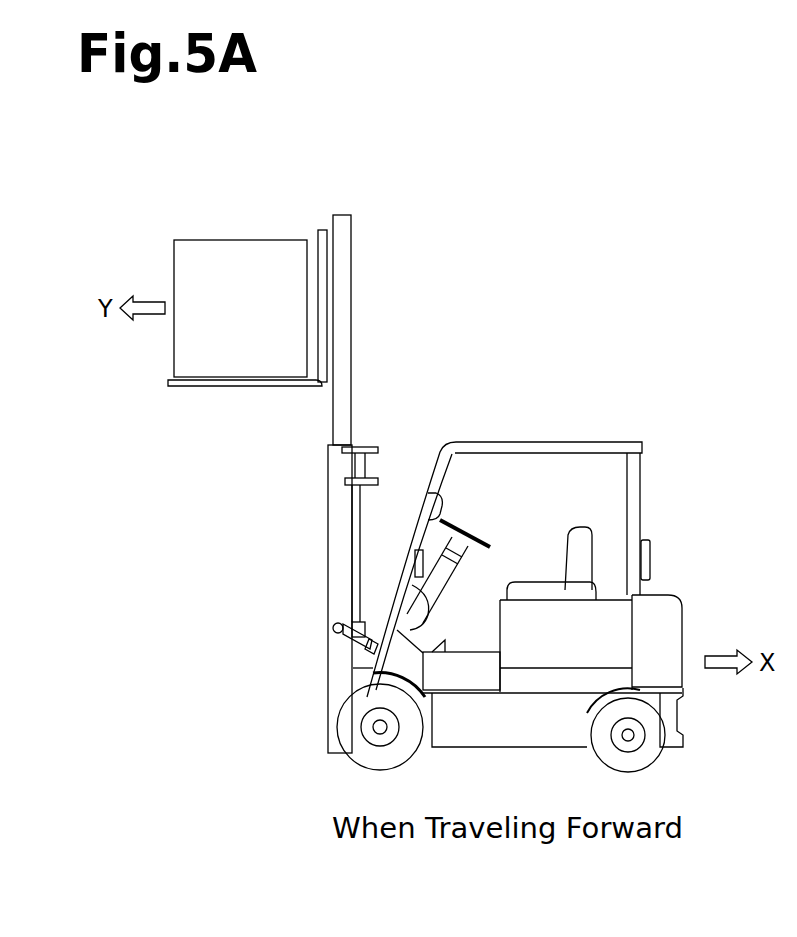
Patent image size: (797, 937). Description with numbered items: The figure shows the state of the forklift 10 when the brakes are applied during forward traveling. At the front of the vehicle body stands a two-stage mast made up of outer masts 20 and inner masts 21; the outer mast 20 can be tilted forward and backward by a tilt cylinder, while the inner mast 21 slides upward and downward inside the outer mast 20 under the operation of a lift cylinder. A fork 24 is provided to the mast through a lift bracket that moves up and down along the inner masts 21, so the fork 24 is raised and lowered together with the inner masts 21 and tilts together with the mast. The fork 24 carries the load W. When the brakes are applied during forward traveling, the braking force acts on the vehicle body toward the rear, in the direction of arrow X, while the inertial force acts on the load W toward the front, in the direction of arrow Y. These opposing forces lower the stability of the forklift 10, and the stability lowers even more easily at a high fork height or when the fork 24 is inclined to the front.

The forklift 10 is at (599, 416).
The outer mast 20 is at (337, 501).
The inner mast 21 is at (345, 270).
The fork 24 is at (222, 387).
The load W is at (237, 251).